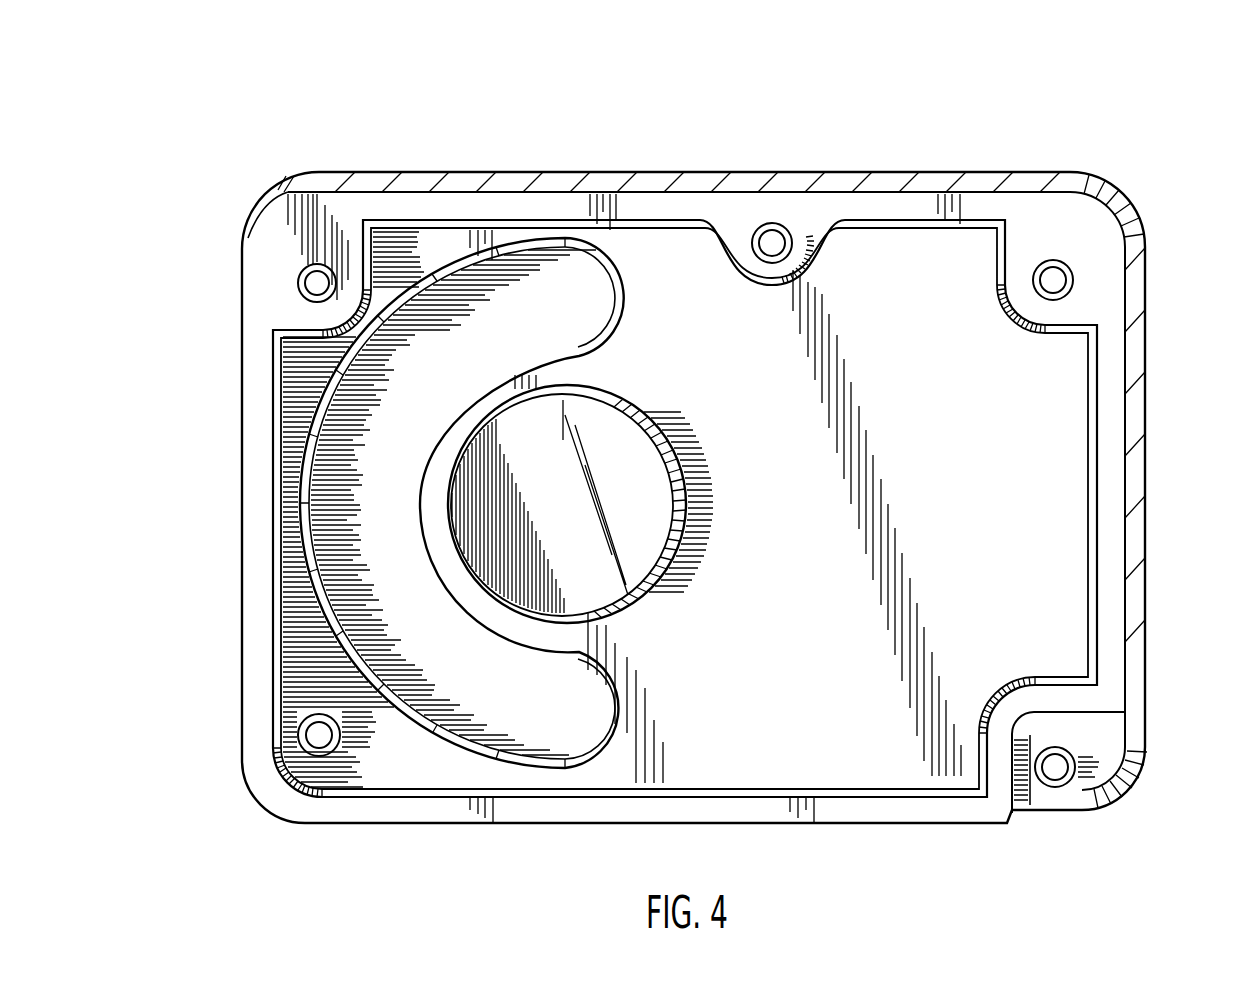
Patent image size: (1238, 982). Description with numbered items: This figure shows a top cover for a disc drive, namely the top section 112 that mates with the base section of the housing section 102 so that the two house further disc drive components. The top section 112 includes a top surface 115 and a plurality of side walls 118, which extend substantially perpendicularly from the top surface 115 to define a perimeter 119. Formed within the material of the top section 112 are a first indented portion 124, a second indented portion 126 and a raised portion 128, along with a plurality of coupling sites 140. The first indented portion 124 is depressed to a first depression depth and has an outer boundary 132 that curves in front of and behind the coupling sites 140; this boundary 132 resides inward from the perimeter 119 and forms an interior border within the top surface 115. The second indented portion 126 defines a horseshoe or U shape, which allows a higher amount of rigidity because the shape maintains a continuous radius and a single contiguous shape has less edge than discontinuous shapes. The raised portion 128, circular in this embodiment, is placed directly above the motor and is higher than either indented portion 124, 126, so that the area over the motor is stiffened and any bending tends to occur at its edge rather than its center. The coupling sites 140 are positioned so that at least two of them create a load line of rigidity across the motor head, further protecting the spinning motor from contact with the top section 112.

The housing section 102 is at (243, 328).
The top section 112 is at (737, 93).
The top surface 115 is at (1025, 210).
The side walls 118 is at (893, 178).
The perimeter 119 is at (497, 188).
The first indented portion 124 is at (1020, 407).
The second indented portion 126 is at (383, 495).
The raised portion 128 is at (608, 455).
The outer boundary 132 is at (655, 218).
The coupling sites 140 is at (772, 240).